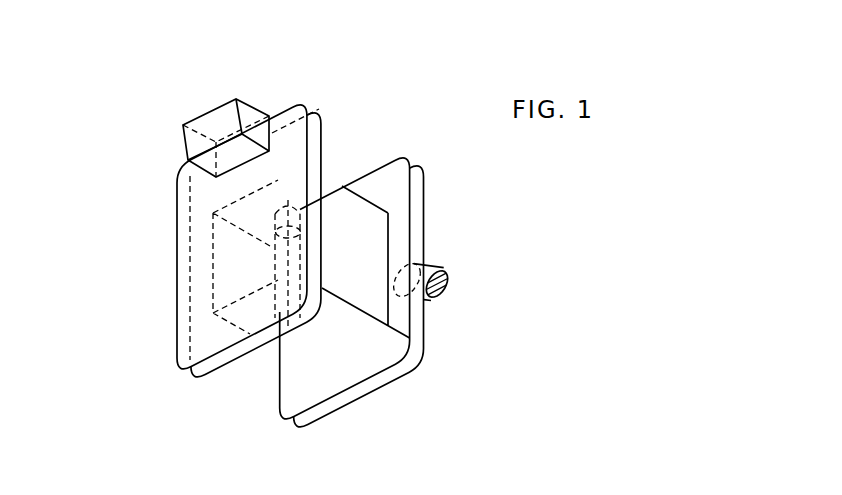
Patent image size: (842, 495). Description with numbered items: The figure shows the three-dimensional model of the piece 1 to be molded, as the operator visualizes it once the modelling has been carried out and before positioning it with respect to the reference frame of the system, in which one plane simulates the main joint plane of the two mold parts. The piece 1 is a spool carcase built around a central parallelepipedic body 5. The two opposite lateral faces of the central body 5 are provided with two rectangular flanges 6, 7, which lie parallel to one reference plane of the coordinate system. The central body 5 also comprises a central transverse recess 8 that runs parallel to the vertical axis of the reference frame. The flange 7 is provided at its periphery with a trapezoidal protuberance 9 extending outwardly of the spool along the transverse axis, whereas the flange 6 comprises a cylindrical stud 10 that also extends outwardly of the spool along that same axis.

The piece 1 is at (168, 367).
The central parallelepipedic body 5 is at (228, 288).
The rectangular flange 6 is at (400, 208).
The rectangular flange 7 is at (180, 262).
The central transverse recess 8 is at (290, 205).
The trapezoidal protuberance 9 is at (213, 125).
The cylindrical stud 10 is at (432, 295).